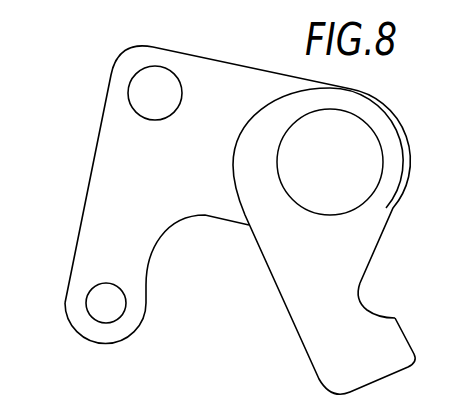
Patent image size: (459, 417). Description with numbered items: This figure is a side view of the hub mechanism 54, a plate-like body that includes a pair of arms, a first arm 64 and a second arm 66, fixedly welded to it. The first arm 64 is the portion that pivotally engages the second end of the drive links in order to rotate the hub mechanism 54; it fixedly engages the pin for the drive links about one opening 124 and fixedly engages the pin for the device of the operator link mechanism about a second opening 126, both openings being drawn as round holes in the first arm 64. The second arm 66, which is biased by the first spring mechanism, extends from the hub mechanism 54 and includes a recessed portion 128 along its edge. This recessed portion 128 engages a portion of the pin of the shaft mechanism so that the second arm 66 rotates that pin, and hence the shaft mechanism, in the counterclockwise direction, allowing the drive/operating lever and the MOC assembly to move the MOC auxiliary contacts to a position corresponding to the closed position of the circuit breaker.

The hub mechanism 54 is at (223, 298).
The first arm 64 is at (88, 245).
The second arm 66 is at (313, 343).
The opening 124 is at (128, 102).
The opening 126 is at (119, 318).
The recessed portion 128 is at (368, 305).